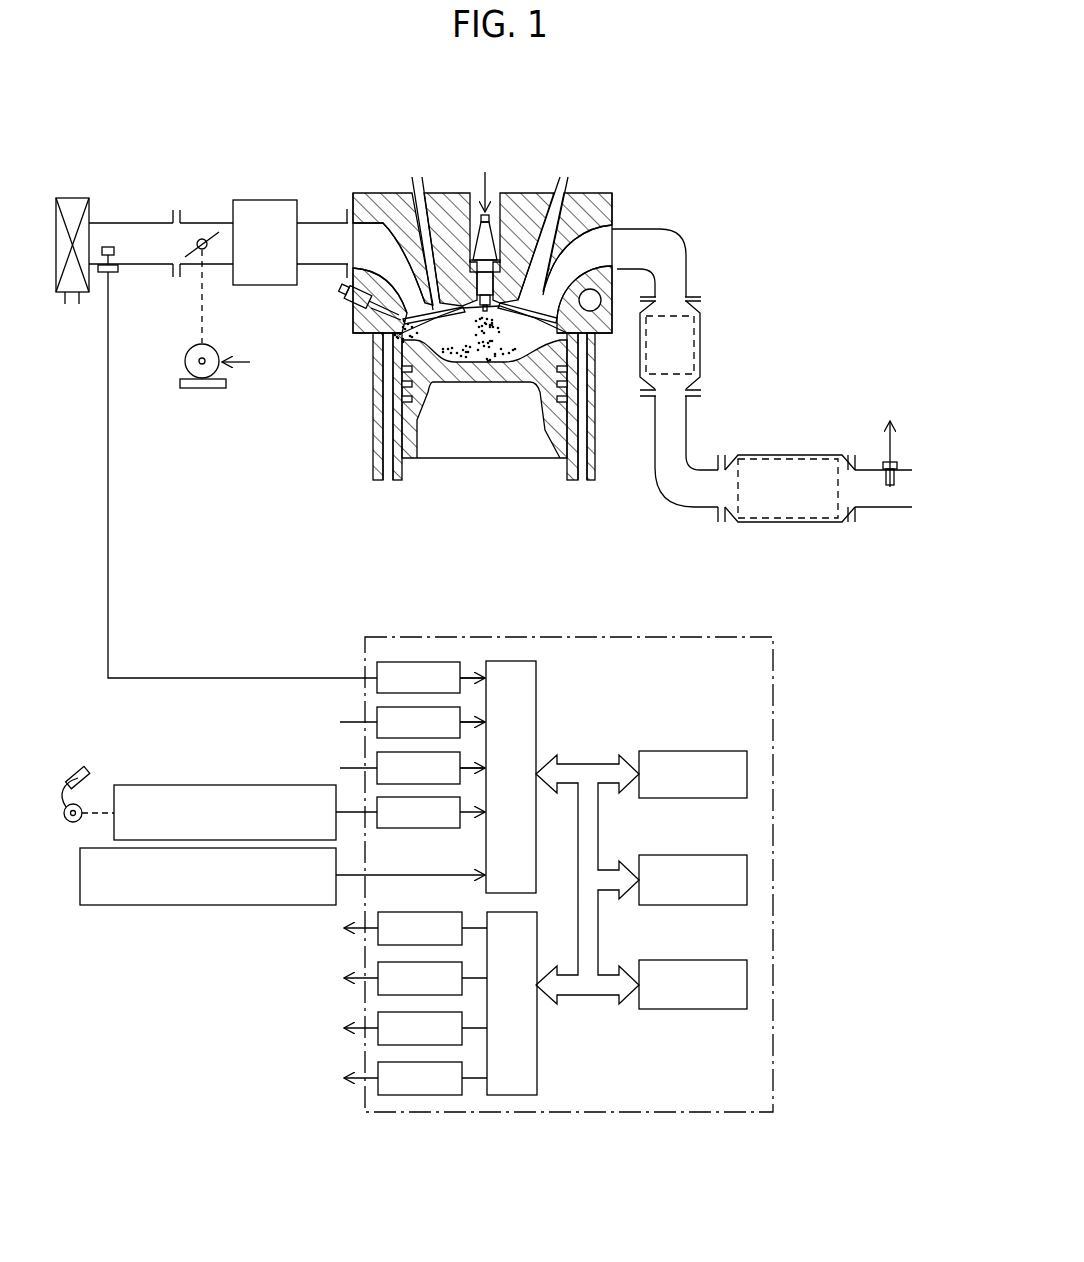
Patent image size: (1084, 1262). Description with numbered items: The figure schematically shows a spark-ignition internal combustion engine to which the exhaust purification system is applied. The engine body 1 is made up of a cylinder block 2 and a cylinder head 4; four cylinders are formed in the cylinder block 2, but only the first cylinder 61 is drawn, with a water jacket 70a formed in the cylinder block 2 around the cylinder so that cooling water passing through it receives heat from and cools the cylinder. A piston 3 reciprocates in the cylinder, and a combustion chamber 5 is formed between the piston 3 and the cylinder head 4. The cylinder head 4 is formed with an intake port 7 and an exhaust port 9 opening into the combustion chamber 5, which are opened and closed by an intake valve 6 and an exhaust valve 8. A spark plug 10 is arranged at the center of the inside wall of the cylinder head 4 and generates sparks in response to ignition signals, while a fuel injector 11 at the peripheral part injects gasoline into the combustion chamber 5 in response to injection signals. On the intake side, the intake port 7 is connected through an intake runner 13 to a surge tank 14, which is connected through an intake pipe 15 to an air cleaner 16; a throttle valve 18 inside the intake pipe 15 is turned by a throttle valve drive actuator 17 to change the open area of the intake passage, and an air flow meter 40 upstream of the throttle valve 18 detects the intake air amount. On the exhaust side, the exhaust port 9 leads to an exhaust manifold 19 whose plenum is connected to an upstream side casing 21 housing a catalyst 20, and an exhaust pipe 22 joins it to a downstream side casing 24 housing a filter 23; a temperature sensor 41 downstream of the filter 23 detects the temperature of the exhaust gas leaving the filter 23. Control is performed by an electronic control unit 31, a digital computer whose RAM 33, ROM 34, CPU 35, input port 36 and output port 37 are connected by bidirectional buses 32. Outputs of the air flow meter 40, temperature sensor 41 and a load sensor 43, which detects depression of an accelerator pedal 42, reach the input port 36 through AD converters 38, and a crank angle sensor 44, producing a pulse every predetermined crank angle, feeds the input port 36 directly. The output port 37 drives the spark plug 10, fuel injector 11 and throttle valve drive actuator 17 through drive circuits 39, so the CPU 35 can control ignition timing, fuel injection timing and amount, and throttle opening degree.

The engine body 1 is at (371, 403).
The cylinder block 2 is at (590, 408).
The piston 3 is at (423, 410).
The cylinder head 4 is at (589, 220).
The combustion chamber 5 is at (535, 325).
The intake valve 6 is at (428, 220).
The intake port 7 is at (380, 237).
The exhaust valve 8 is at (548, 203).
The exhaust port 9 is at (594, 246).
The spark plug 10 is at (484, 245).
The fuel injector 11 is at (347, 312).
The intake runner 13 is at (319, 237).
The surge tank 14 is at (267, 272).
The intake pipe 15 is at (197, 266).
The air cleaner 16 is at (70, 198).
The throttle valve drive actuator 17 is at (185, 363).
The throttle valve 18 is at (210, 252).
The exhaust manifold 19 is at (650, 229).
The catalyst 20 is at (700, 316).
The upstream side casing 21 is at (700, 358).
The exhaust pipe 22 is at (686, 433).
The filter 23 is at (781, 455).
The downstream side casing 24 is at (828, 455).
The electronic control unit 31 is at (778, 721).
The bidirectional bus 32 is at (590, 763).
The RAM 33 is at (711, 751).
The ROM 34 is at (713, 855).
The CPU 35 is at (700, 960).
The input port 36 is at (537, 665).
The output port 37 is at (537, 1060).
The AD converter 38 is at (377, 686).
The drive circuit 39 is at (378, 1068).
The air flow meter 40 is at (108, 247).
The temperature sensor 41 is at (900, 463).
The accelerator pedal 42 is at (76, 773).
The load sensor 43 is at (185, 785).
The crank angle sensor 44 is at (200, 905).
The first cylinder 61 is at (574, 462).
The water jacket 70a is at (390, 453).